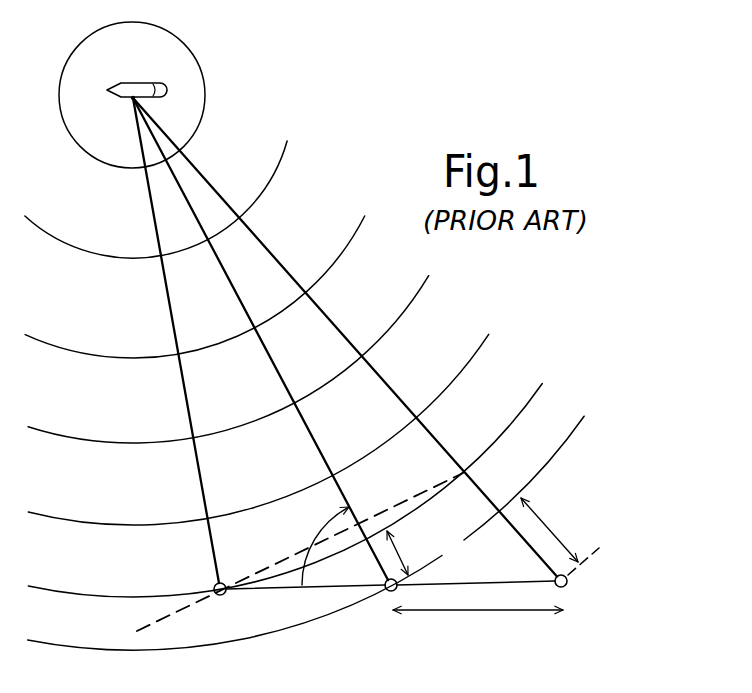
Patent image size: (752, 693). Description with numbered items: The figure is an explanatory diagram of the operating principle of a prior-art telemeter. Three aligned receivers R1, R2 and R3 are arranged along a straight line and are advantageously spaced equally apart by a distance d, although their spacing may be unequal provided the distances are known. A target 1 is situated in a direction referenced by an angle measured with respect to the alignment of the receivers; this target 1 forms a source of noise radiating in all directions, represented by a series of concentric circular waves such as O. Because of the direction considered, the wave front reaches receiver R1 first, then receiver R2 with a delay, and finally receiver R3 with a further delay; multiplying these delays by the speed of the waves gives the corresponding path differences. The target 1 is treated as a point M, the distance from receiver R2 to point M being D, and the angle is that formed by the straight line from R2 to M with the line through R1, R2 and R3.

The target 1 is at (165, 90).
The point M is at (143, 99).
The concentric circular waves O is at (407, 317).
The distance |R2M| D is at (290, 396).
The receiver R1 is at (225, 594).
The receiver R2 is at (389, 591).
The receiver R3 is at (567, 584).
The spacing d is at (478, 624).